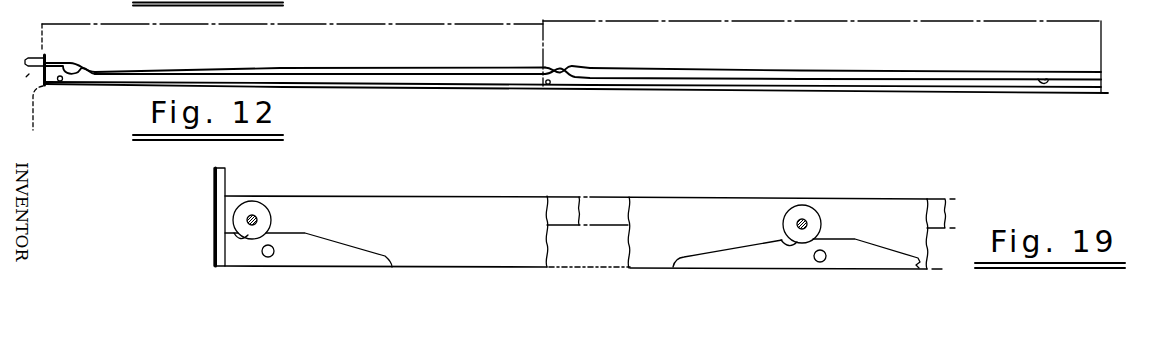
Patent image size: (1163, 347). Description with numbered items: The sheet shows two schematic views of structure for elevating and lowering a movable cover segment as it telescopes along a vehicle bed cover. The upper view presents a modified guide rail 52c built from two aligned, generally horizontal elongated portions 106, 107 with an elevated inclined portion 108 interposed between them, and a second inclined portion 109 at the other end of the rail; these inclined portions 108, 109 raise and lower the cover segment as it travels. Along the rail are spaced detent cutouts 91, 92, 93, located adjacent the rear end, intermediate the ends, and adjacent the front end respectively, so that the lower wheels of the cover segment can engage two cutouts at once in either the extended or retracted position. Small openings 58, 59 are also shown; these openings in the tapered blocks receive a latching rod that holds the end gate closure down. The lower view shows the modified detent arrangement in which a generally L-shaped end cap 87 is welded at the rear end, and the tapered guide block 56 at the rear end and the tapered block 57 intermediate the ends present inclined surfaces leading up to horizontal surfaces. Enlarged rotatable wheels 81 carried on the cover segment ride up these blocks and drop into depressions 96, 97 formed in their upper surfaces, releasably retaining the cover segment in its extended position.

In FIG. 12, the guide rail 52c is at (333, 63).
In FIG. 12, the horizontal elongated portion 106 is at (395, 71).
In FIG. 12, the horizontal elongated portion 107 is at (797, 73).
In FIG. 12, the inclined portion 108 is at (567, 66).
In FIG. 12, the second inclined portion 109 is at (63, 63).
In FIG. 12, the cutout 91 is at (78, 70).
In FIG. 12, the cutout 92 is at (573, 70).
In FIG. 12, the cutout 93 is at (1042, 78).
In FIG. 12, the opening 58 is at (61, 82).
In FIG. 12, the opening 59 is at (553, 85).
In FIG. 19, the end cap 87 is at (221, 196).
In FIG. 19, the wheel 81 is at (270, 217).
In FIG. 19, the tapered guide block 56 is at (357, 250).
In FIG. 19, the tapered block 57 is at (866, 246).
In FIG. 19, the depression 96 is at (241, 242).
In FIG. 19, the depression 97 is at (783, 244).